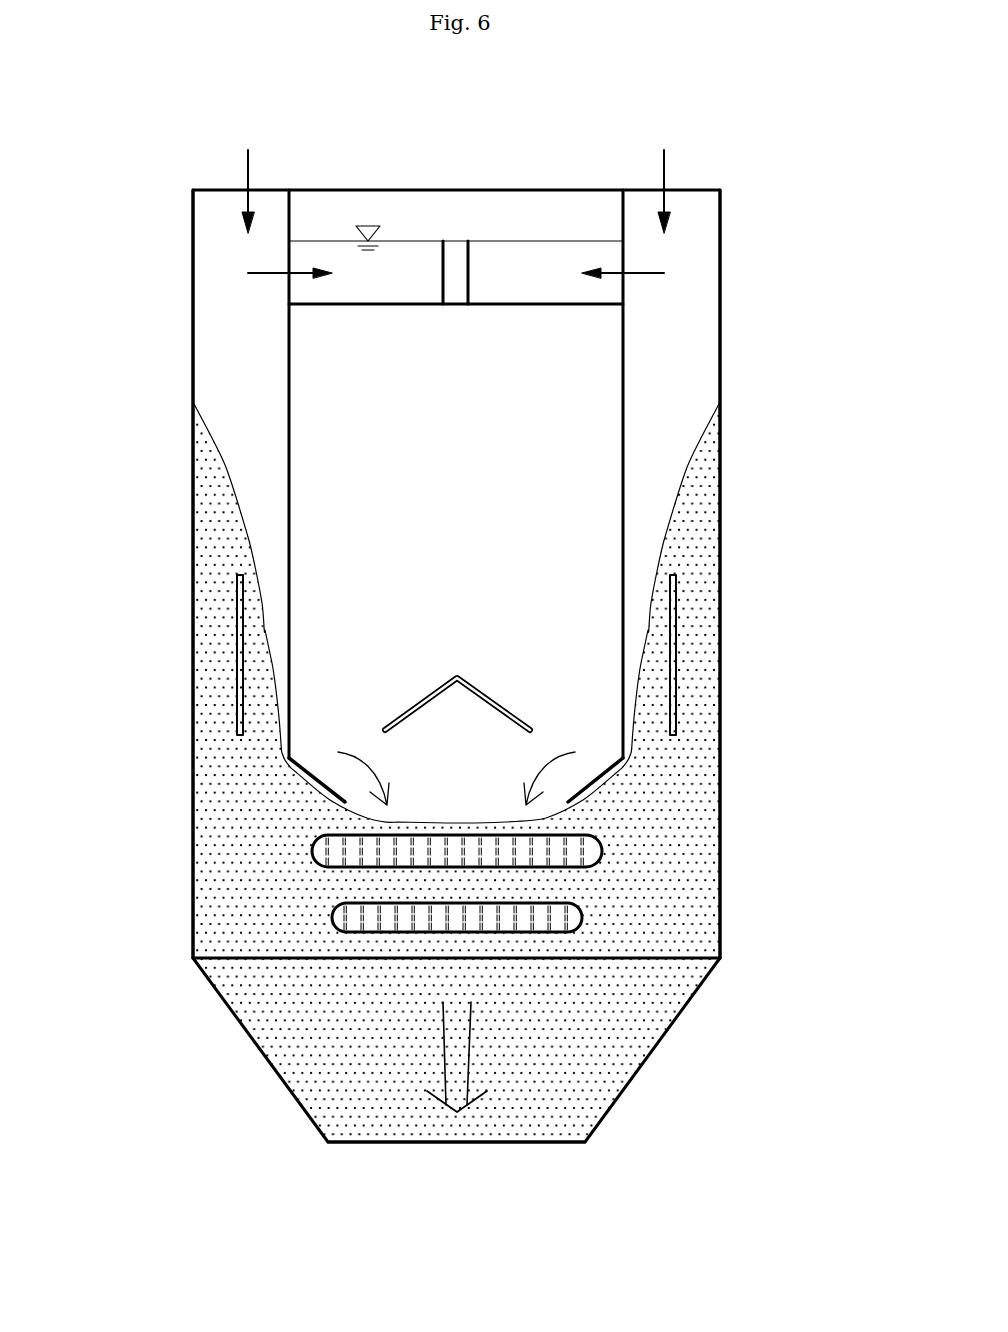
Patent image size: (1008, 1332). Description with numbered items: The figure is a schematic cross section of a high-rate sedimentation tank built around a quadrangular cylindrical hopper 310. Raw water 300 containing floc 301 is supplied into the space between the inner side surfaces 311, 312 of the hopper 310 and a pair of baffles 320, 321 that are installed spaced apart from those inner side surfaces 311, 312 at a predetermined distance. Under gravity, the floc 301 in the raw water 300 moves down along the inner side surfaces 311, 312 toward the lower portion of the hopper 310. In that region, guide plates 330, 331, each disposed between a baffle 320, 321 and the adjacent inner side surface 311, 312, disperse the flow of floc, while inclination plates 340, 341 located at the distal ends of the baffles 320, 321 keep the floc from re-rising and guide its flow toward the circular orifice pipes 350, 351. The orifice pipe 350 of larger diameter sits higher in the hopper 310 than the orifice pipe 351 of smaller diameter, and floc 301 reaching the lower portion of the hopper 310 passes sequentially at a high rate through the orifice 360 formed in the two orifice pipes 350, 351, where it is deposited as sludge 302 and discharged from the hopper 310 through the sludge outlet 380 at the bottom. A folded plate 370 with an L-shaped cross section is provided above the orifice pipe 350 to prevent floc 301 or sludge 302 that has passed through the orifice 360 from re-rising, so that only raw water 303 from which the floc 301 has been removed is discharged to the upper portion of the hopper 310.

The raw water 300 is at (456, 175).
The floc 301 is at (212, 538).
The sludge 302 is at (468, 1048).
The raw water from which the floc is removed 303 is at (664, 330).
The quadrangular cylindrical hopper 310 is at (720, 258).
The inner side surface 311 is at (193, 580).
The inner side surface 312 is at (700, 615).
The baffle 320 is at (289, 410).
The baffle 321 is at (623, 472).
The guide plate 330 is at (238, 667).
The guide plate 331 is at (676, 682).
The inclination plate 340 is at (317, 785).
The inclination plate 341 is at (652, 778).
The circular orifice pipe 350 is at (593, 850).
The circular orifice pipe 351 is at (577, 918).
The orifice 360 is at (517, 867).
The folded plate 370 is at (457, 676).
The sludge outlet 380 is at (457, 1145).